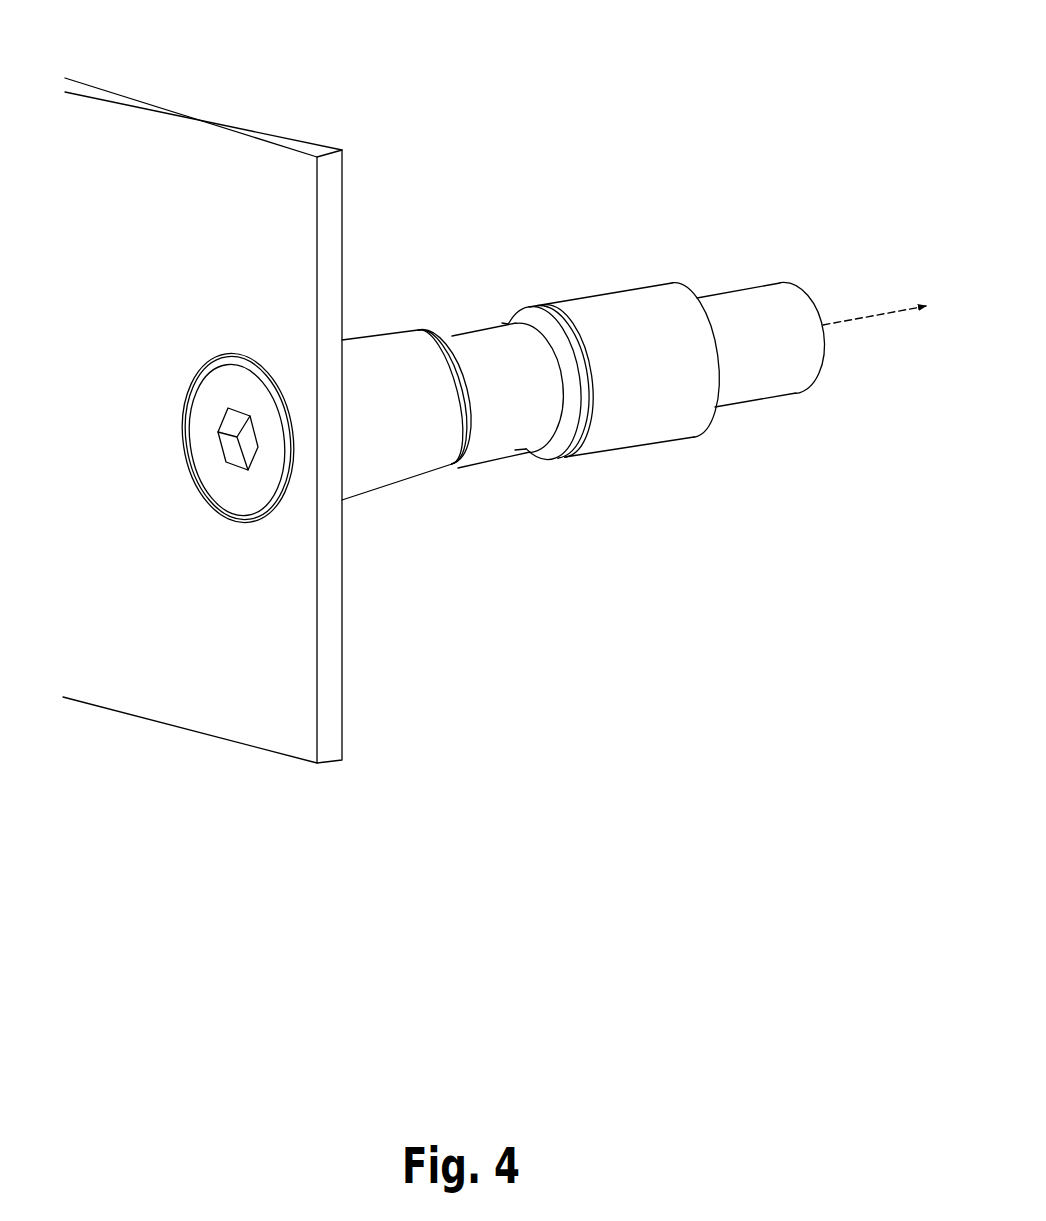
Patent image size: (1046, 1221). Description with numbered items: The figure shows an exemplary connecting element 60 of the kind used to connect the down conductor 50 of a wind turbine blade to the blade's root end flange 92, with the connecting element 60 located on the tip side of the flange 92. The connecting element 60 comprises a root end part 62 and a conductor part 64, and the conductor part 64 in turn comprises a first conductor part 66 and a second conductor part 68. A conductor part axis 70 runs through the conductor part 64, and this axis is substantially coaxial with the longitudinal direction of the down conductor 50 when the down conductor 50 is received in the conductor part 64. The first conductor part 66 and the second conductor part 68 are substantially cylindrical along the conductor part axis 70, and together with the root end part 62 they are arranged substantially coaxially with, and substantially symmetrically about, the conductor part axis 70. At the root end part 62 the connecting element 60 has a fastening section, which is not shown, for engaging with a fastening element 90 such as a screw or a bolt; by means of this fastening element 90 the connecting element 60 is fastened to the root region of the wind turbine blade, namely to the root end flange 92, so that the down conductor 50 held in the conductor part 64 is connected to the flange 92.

The down conductor 50 is at (763, 373).
The connecting element 60 is at (498, 192).
The root end part 62 is at (410, 500).
The conductor part 64 is at (585, 476).
The first conductor part 66 is at (497, 352).
The second conductor part 68 is at (605, 323).
The conductor part axis 70 is at (845, 322).
The fastening element 90 is at (242, 445).
The root end flange 92 is at (198, 170).